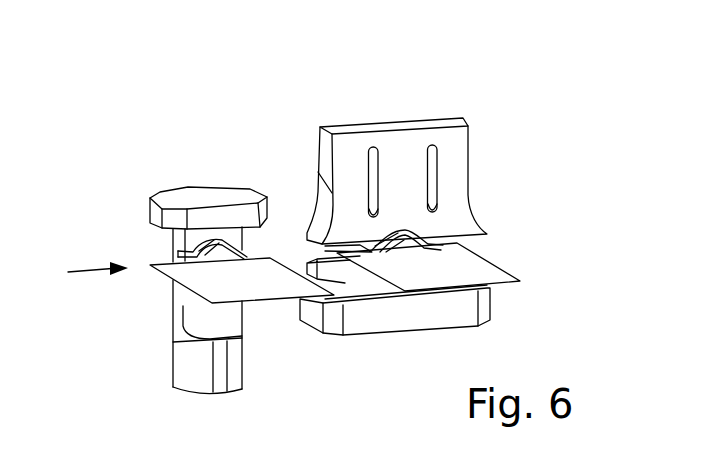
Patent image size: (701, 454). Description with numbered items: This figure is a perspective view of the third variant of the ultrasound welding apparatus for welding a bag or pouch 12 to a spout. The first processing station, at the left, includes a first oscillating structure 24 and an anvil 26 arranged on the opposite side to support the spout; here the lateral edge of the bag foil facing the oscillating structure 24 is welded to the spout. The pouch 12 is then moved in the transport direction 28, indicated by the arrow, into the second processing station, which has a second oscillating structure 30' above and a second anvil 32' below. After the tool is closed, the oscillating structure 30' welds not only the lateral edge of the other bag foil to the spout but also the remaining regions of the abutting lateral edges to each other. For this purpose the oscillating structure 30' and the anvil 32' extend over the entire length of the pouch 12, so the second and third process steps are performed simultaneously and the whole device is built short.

The bag or pouch 12 is at (258, 273).
The first oscillating structure 24 is at (165, 244).
The anvil 26 is at (216, 197).
The transport direction 28 is at (83, 269).
The second oscillating structure 30' is at (397, 150).
The second anvil 32' is at (395, 332).